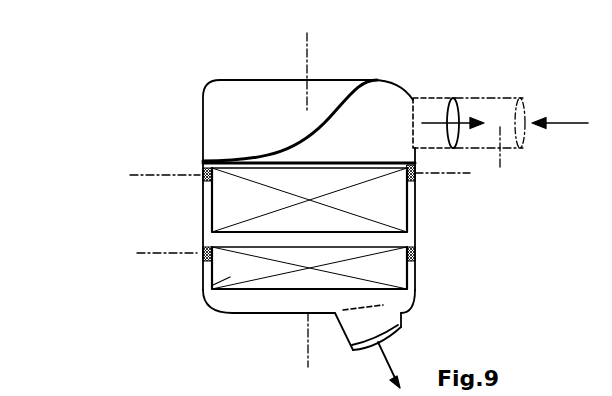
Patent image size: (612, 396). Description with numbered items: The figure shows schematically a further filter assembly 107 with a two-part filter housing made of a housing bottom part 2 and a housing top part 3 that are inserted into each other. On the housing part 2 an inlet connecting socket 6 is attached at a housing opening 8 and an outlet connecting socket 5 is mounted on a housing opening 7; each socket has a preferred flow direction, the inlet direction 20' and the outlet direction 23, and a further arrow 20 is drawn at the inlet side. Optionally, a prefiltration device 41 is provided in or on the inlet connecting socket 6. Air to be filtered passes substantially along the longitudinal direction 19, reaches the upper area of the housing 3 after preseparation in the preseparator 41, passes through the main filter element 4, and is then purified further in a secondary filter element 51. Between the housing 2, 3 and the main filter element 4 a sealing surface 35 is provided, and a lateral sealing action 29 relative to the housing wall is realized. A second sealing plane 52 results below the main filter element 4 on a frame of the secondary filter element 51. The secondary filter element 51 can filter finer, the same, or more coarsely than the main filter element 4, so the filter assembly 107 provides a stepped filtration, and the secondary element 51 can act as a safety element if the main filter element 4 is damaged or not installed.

The filter assembly 107 is at (148, 103).
The housing top part 3 is at (227, 113).
The longitudinal direction 19 is at (307, 47).
The housing opening 8 is at (409, 108).
The inlet connecting socket 6 is at (433, 112).
The prefiltration device 41 is at (490, 146).
The preferred direction 20' is at (460, 89).
The flow direction arrow 20 is at (560, 103).
The sealing surface 35 is at (170, 175).
The sealing action 29 is at (204, 178).
The main filter element 4 is at (397, 203).
The second sealing plane 52 is at (145, 257).
The secondary filter element 51 is at (205, 295).
The housing bottom part 2 is at (235, 300).
The housing opening 7 is at (383, 306).
The outlet connecting socket 5 is at (400, 318).
The preferred direction 23 is at (382, 365).